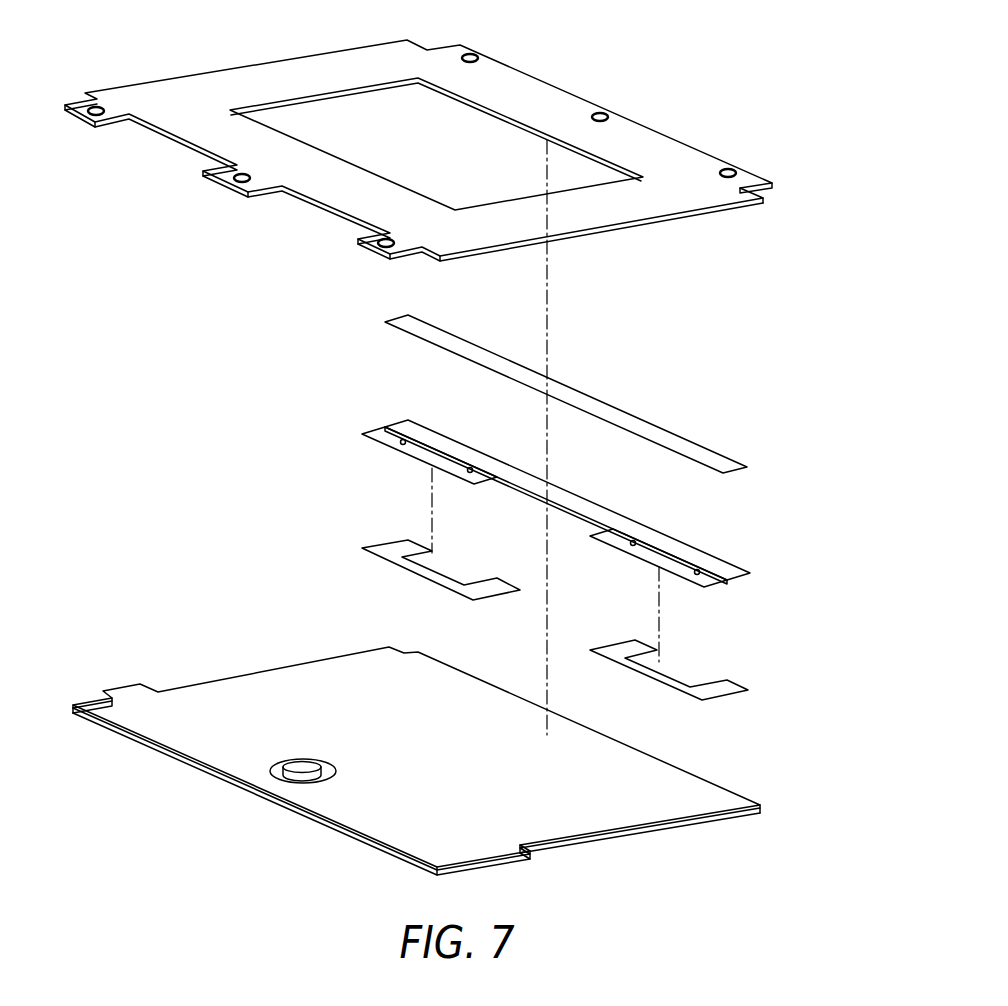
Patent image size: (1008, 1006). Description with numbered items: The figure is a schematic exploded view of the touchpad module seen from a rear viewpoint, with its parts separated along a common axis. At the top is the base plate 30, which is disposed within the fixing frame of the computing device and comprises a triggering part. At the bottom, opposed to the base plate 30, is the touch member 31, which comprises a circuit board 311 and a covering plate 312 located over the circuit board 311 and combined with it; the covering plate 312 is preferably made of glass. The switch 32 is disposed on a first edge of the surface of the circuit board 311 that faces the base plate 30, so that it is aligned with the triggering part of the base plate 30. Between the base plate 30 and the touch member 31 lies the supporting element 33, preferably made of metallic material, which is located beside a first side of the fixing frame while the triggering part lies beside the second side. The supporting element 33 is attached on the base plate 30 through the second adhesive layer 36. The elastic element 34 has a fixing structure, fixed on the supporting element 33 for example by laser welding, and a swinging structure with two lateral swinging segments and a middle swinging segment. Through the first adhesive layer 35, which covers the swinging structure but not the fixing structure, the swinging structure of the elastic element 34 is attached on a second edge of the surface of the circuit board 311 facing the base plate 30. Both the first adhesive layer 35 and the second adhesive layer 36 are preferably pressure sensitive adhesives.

The base plate 30 is at (667, 152).
The touch member 31 is at (469, 761).
The circuit board 311 is at (723, 800).
The covering plate 312 is at (727, 823).
The switch 32 is at (273, 784).
The supporting element 33 is at (687, 553).
The elastic element 34 is at (393, 443).
The first adhesive layer 35 is at (395, 558).
The second adhesive layer 36 is at (665, 438).